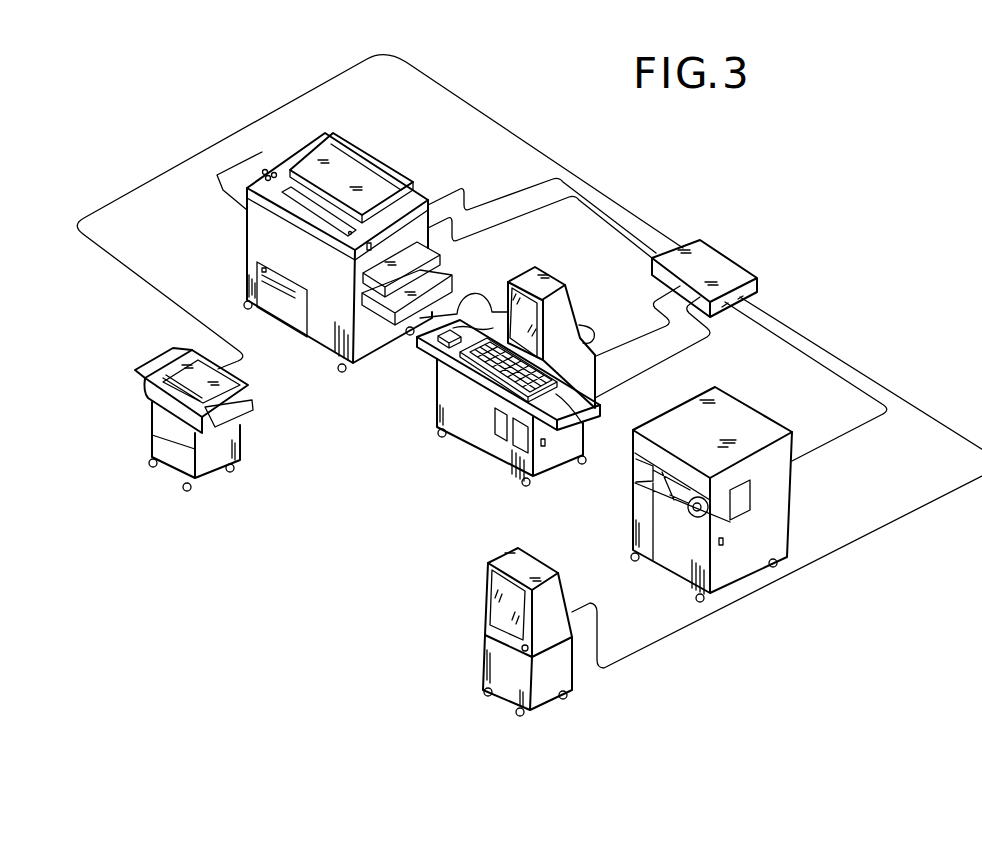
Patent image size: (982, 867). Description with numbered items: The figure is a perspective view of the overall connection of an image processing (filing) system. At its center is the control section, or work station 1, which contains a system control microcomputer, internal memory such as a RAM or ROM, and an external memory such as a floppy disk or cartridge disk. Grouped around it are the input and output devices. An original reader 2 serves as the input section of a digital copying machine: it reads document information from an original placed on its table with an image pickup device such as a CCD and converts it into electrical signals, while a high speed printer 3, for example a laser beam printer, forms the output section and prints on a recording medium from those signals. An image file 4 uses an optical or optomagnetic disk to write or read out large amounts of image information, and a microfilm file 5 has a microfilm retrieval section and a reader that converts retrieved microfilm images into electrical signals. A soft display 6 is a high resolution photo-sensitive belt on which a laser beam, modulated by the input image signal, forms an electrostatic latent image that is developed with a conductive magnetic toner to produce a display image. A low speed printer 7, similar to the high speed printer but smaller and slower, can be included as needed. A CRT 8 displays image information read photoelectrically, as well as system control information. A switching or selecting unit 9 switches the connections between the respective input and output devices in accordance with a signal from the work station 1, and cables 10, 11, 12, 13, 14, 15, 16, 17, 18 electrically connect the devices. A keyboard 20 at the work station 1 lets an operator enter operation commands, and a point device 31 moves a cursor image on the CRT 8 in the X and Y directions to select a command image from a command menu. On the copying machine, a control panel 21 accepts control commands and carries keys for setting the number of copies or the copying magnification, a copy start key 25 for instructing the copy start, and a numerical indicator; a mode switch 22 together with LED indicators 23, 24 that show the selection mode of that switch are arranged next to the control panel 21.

The control section (work station) 1 is at (453, 404).
The original reader 2 is at (330, 140).
The high speed printer 3 is at (246, 239).
The image file 4 is at (297, 320).
The microfilm file 5 is at (779, 430).
The soft display 6 is at (528, 563).
The low speed printer 7 is at (158, 438).
The CRT 8 is at (545, 288).
The switching (selecting) unit 9 is at (697, 242).
The cable 10 is at (532, 141).
The cable 11 is at (510, 196).
The cable 12 is at (521, 214).
The cable 13 is at (637, 343).
The cable 14 is at (638, 373).
The cable 15 is at (783, 341).
The cable 16 is at (812, 339).
The cable 17 is at (485, 293).
The cable 18 is at (587, 331).
The keyboard 20 is at (588, 424).
The control panel 21 is at (316, 203).
The mode switch 22 is at (265, 169).
The LED indicator 23 is at (276, 173).
The LED indicator 24 is at (246, 227).
The copy start key 25 is at (352, 252).
The point device 31 is at (438, 337).